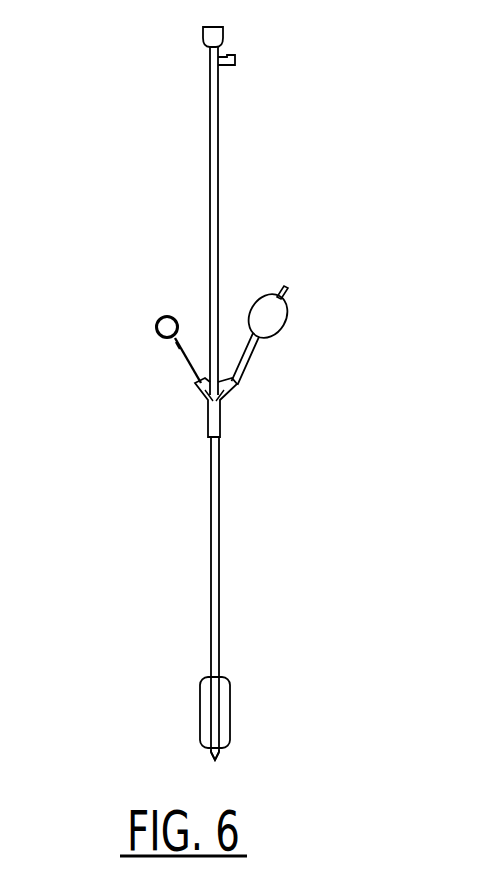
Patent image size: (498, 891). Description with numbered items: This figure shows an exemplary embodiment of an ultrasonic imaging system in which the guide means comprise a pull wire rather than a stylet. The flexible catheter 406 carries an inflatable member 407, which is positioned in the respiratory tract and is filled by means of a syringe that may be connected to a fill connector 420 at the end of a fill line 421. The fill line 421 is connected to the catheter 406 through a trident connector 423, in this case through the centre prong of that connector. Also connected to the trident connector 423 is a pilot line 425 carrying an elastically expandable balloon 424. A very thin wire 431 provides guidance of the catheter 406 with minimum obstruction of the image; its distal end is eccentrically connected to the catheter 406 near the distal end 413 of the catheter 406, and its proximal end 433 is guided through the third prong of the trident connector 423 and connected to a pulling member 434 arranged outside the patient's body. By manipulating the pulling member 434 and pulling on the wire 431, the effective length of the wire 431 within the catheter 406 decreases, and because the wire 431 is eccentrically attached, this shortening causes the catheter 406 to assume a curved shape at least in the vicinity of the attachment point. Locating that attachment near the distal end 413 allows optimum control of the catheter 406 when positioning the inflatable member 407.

The fill connector 420 is at (227, 53).
The fill line 421 is at (215, 208).
The trident connector 423 is at (228, 410).
The elastically expandable balloon 424 is at (280, 310).
The pilot line 425 is at (255, 348).
The wire 431 is at (188, 365).
The proximal end of the wire 433 is at (175, 340).
The pulling member 434 is at (163, 315).
The flexible catheter 406 is at (215, 553).
The inflatable member 407 is at (223, 703).
The distal end of the catheter 413 is at (210, 752).